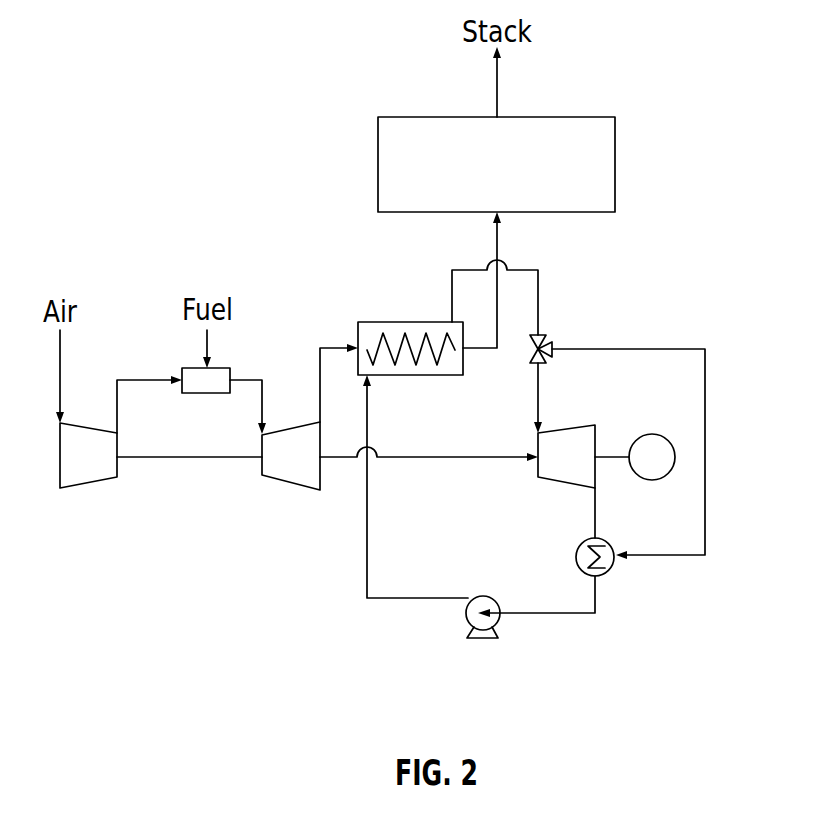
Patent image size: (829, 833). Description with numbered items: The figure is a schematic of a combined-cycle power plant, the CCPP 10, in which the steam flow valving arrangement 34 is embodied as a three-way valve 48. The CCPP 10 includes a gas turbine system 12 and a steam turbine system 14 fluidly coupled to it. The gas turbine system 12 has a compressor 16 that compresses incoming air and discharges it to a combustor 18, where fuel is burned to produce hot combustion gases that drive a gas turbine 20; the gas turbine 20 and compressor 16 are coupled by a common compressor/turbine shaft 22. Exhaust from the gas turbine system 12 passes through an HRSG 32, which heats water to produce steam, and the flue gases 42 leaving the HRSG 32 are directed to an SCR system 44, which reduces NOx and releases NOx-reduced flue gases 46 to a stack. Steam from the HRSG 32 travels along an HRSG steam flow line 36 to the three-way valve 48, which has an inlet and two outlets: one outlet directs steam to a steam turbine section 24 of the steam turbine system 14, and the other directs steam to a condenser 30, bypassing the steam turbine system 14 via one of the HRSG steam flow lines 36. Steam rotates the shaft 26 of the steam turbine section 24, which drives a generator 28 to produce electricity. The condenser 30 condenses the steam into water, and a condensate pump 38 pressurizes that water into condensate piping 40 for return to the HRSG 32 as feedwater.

The CCPP 10 is at (154, 38).
The gas turbine system 12 is at (307, 528).
The steam turbine system 14 is at (524, 465).
The compressor 16 is at (77, 487).
The combustor 18 is at (222, 368).
The gas turbine 20 is at (267, 477).
The compressor/turbine shaft 22 is at (192, 460).
The steam turbine section 24 is at (598, 430).
The shaft 26 is at (437, 458).
The generator 28 is at (652, 482).
The condenser 30 is at (583, 545).
The HRSG 32 is at (377, 322).
The steam flow valving arrangement 34 is at (561, 297).
The HRSG steam flow line 36 is at (452, 288).
The condensate pump 38 is at (467, 610).
The condensate piping 40 is at (365, 585).
The flue gases 42 is at (497, 233).
The SCR system 44 is at (615, 162).
The NOx-reduced flue gases 46 is at (497, 95).
The three-way valve 48 is at (542, 335).